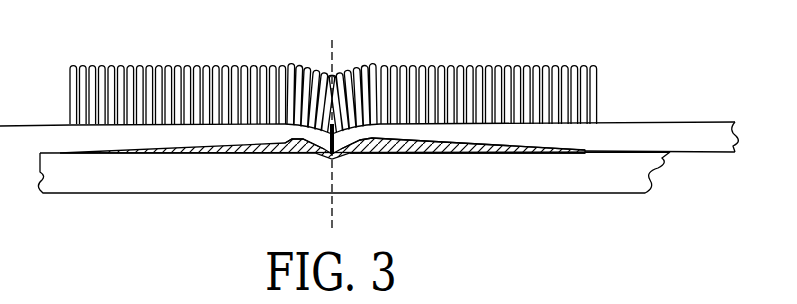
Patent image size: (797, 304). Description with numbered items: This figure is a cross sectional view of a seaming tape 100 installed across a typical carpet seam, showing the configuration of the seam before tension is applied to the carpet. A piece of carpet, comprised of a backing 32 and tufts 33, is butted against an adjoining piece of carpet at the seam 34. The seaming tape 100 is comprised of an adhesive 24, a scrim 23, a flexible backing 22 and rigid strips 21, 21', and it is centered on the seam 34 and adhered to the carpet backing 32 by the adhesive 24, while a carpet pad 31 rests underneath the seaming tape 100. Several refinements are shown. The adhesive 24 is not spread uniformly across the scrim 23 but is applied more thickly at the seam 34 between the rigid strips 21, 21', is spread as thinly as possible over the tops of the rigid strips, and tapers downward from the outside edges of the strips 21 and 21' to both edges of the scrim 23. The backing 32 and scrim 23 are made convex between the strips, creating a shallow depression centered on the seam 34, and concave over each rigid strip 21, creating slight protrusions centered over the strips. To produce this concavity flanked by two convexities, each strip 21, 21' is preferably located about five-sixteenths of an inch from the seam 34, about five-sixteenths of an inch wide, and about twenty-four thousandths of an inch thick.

The seaming tape 100 is at (68, 151).
The rigid strip 21 is at (322, 185).
The rigid strip 21' is at (463, 184).
The flexible backing 22 is at (571, 150).
The scrim 23 is at (238, 143).
The adhesive 24 is at (485, 154).
The carpet pad 31 is at (645, 193).
The backing 32 is at (712, 130).
The tufts 33 is at (470, 78).
The seam 34 is at (332, 110).